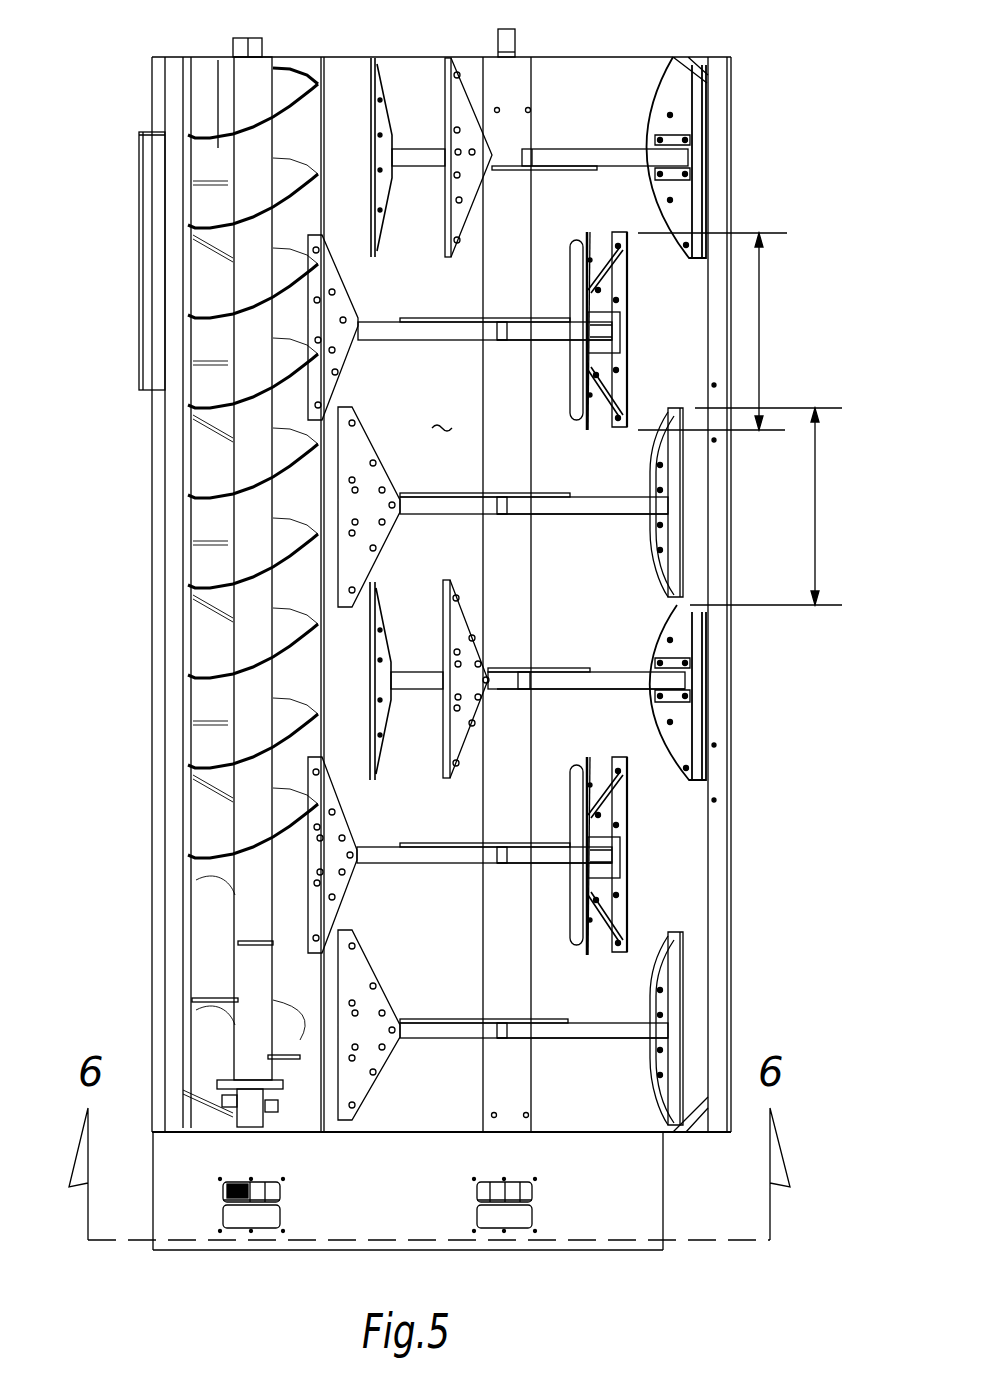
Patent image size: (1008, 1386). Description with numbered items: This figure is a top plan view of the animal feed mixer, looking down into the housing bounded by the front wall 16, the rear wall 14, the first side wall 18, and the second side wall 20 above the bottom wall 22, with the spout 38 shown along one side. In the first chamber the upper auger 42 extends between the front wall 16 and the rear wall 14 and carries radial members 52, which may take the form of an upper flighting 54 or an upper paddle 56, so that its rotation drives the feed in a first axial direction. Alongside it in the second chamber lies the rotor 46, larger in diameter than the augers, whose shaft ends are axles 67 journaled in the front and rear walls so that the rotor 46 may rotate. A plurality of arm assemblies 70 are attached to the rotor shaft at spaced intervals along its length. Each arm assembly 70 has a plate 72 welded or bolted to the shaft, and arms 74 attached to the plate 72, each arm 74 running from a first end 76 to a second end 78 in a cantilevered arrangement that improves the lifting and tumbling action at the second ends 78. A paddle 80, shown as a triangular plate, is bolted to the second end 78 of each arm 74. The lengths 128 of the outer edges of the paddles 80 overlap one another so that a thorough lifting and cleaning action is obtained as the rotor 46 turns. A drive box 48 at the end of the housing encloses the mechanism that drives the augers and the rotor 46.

The rear wall 14 is at (640, 57).
The front wall 16 is at (395, 1132).
The first side wall 18 is at (710, 882).
The second side wall 20 is at (152, 540).
The bottom wall 22 is at (442, 413).
The spout 38 is at (139, 232).
The upper auger 42 is at (262, 57).
The rotor 46 is at (533, 90).
The drive box 48 is at (195, 1250).
The radial members 52 is at (210, 655).
The upper flighting 54 is at (210, 750).
The upper paddle 56 is at (238, 943).
The axles 67 is at (510, 29).
The arm assemblies 70 is at (612, 147).
The plate 72 is at (460, 320).
The arms 74 is at (394, 310).
The first end 76 is at (455, 352).
The second end 78 is at (376, 341).
The paddle 80 is at (457, 58).
The lengths 128 is at (772, 331).